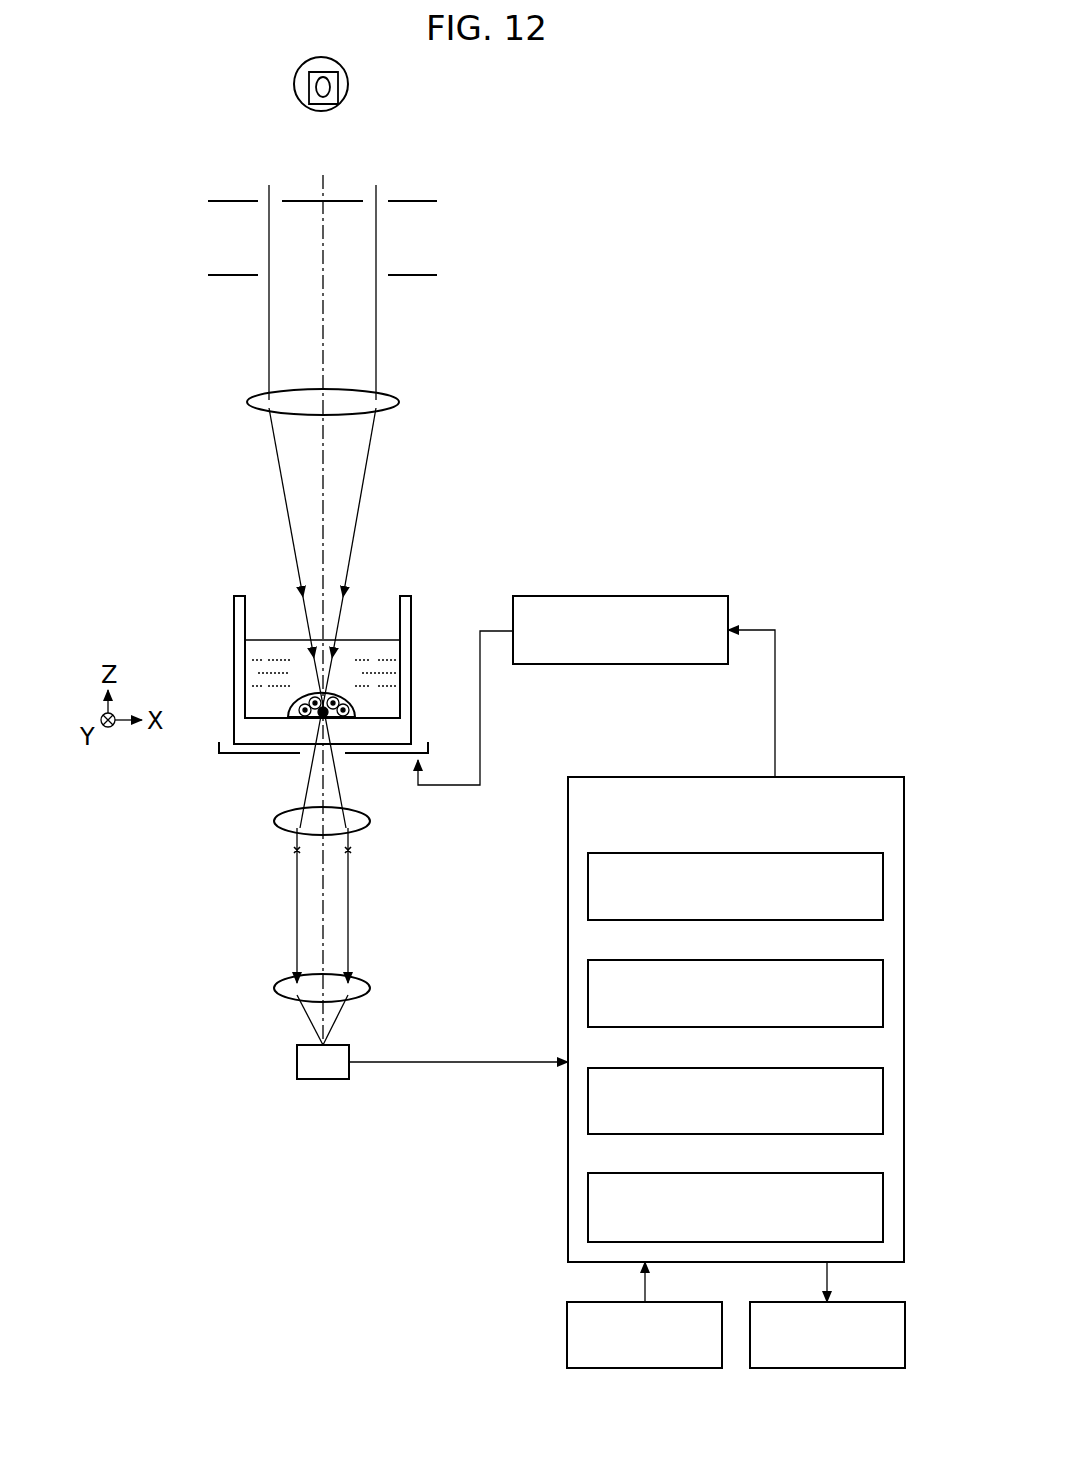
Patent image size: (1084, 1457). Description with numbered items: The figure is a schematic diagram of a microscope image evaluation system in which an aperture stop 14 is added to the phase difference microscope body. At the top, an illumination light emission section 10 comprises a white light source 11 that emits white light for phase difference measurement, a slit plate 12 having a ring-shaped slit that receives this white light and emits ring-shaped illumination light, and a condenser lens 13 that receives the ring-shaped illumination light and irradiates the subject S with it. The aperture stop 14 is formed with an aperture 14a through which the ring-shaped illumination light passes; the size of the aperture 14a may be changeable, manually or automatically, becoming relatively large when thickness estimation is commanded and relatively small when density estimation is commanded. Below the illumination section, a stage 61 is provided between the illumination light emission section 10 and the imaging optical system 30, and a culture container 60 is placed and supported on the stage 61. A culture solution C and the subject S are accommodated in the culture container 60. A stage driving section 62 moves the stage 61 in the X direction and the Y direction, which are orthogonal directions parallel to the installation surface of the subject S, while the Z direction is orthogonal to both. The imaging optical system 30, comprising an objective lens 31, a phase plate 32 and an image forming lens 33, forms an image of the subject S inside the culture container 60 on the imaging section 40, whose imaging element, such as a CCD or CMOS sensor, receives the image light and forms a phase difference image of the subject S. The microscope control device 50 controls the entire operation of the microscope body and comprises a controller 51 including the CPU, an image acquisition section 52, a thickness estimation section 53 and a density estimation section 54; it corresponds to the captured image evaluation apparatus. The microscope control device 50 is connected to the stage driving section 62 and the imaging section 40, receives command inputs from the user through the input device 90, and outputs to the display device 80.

The illumination light emission section 10 is at (192, 193).
The white light source 11 is at (349, 83).
The slit plate 12 is at (427, 200).
The condenser lens 13 is at (399, 402).
The aperture stop 14 is at (218, 273).
The aperture 14a is at (352, 272).
The imaging optical system 30 is at (217, 912).
The objective lens 31 is at (274, 822).
The phase plate 32 is at (293, 850).
The image forming lens 33 is at (372, 988).
The imaging section 40 is at (350, 1053).
The microscope control device 50 is at (867, 777).
The controller 51 is at (843, 853).
The image acquisition section 52 is at (843, 960).
The thickness estimation section 53 is at (843, 1068).
The density estimation section 54 is at (843, 1173).
The culture container 60 is at (234, 642).
The stage 61 is at (373, 757).
The stage driving section 62 is at (688, 596).
The display device 80 is at (865, 1302).
The input device 90 is at (682, 1302).
The subject S is at (342, 688).
The culture solution C is at (390, 648).